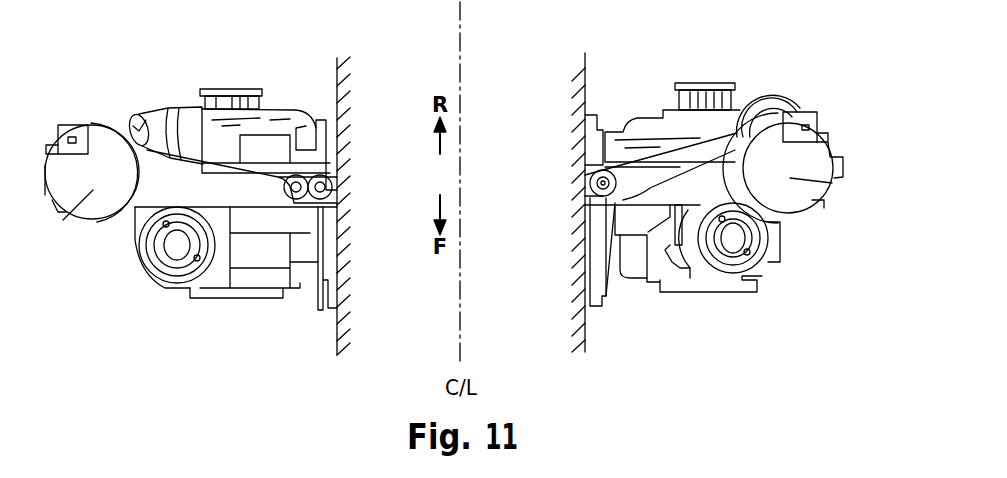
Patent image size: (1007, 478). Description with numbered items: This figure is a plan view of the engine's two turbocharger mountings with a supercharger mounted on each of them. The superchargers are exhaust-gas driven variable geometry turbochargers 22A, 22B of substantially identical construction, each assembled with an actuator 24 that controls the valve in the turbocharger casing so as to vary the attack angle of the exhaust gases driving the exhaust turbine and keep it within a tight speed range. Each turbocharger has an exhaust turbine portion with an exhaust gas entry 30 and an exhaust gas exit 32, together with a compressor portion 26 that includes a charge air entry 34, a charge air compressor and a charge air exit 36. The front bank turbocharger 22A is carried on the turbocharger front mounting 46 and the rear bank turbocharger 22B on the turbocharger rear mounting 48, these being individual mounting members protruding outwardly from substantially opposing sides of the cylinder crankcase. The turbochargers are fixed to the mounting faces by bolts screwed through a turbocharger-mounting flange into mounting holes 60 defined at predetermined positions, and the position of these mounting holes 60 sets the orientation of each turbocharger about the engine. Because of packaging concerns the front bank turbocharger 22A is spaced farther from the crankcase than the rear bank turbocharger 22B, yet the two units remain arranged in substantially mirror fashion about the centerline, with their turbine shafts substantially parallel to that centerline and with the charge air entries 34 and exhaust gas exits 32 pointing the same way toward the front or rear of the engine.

The front bank turbocharger 22A is at (746, 70).
The rear bank turbocharger 22B is at (144, 90).
The actuator 24 is at (95, 191).
The compressor portion 26 is at (280, 250).
The exhaust gas entry 30 is at (178, 244).
The exhaust gas exit 32 is at (250, 292).
The charge air entry 34 is at (240, 90).
The charge air exit 36 is at (137, 128).
The turbocharger front mounting 46 is at (604, 120).
The turbocharger rear mounting 48 is at (322, 122).
The mounting holes 60 is at (334, 192).